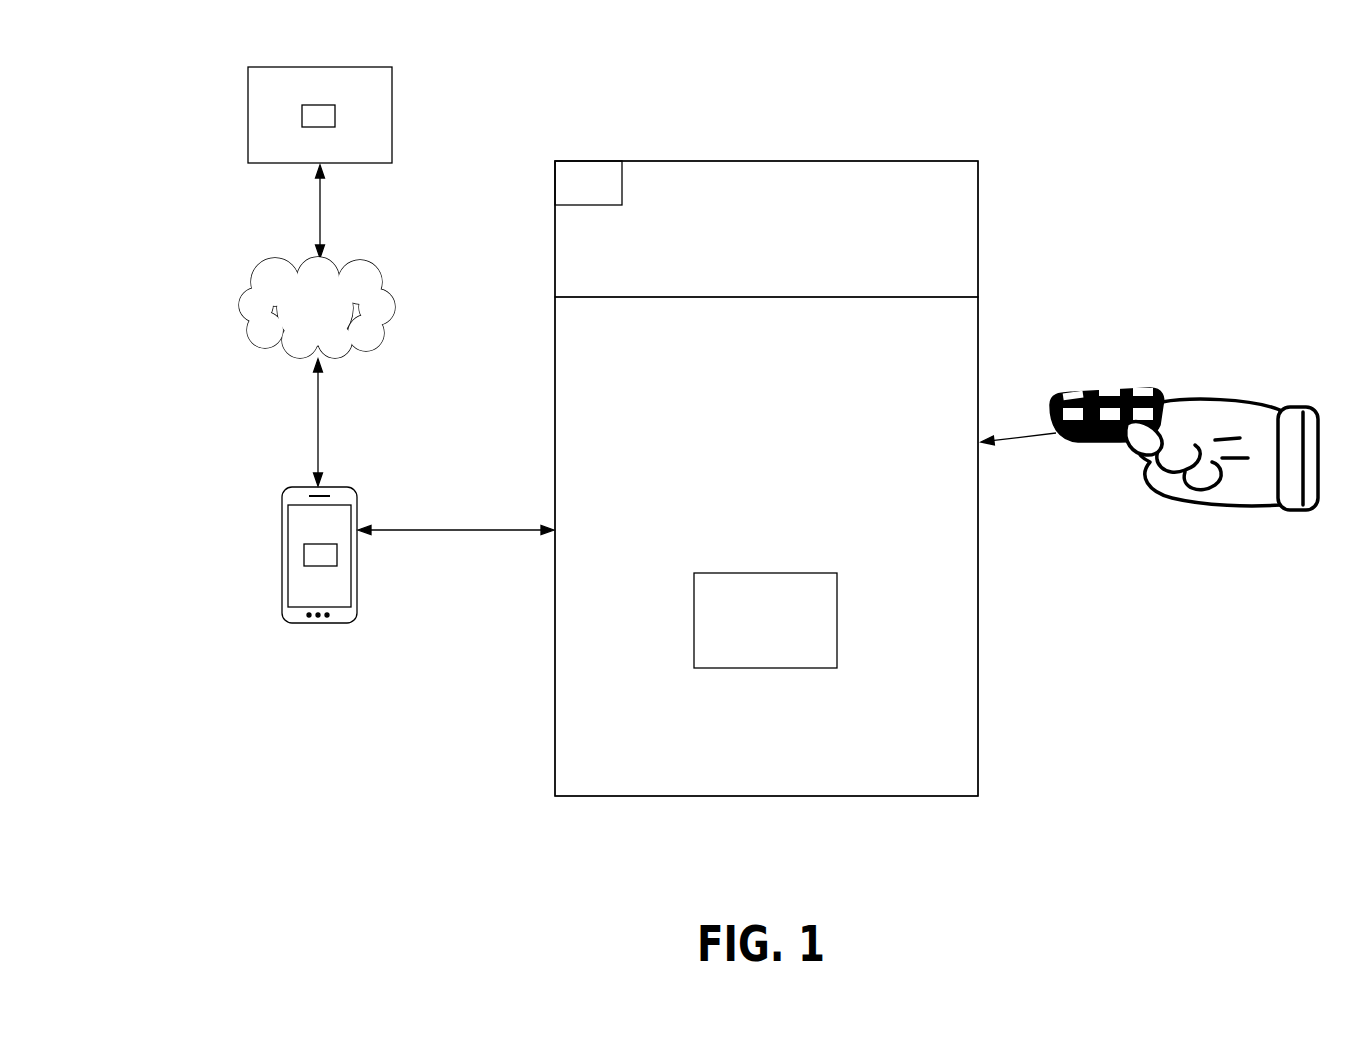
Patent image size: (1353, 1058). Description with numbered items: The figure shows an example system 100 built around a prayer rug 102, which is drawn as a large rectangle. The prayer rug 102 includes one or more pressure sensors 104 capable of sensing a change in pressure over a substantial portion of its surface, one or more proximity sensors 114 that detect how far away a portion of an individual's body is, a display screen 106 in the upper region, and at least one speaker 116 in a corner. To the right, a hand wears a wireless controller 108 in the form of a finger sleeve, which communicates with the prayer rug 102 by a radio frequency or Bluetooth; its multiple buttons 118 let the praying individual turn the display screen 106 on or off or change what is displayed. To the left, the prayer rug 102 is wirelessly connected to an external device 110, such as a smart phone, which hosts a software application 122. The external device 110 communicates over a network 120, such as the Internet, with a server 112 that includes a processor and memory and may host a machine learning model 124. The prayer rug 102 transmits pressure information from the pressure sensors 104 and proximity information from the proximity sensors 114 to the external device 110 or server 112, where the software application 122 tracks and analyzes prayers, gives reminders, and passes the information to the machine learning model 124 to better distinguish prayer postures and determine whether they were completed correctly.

The system 100 is at (734, 454).
The prayer rug 102 is at (755, 488).
The pressure sensors 104 is at (717, 546).
The display screen 106 is at (822, 203).
The wireless controller 108 is at (1149, 412).
The external device 110 is at (253, 591).
The server 112 is at (330, 115).
The proximity sensors 114 is at (818, 620).
The speaker 116 is at (641, 157).
The buttons 118 is at (1098, 391).
The network 120 is at (374, 307).
The software application 122 is at (260, 540).
The machine learning model 124 is at (252, 101).